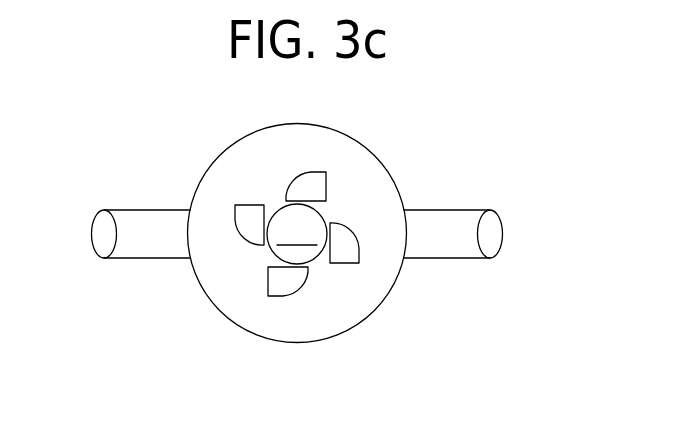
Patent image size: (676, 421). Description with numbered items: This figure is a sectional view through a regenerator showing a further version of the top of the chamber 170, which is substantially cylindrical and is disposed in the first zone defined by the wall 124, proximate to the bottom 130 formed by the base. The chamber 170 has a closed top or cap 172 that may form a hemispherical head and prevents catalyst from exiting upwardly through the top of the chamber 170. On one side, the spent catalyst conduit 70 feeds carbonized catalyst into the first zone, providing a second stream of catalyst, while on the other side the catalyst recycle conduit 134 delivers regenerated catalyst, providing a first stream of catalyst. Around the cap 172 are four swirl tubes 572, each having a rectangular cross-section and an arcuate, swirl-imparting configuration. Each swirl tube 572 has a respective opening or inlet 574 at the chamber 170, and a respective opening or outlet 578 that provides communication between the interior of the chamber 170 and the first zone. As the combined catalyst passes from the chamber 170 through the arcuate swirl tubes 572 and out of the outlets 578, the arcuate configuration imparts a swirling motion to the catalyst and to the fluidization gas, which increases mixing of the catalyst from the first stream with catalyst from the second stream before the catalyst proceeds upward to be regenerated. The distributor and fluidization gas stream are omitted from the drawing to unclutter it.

The spent catalyst conduit 70 is at (467, 210).
The wall 124 is at (253, 334).
The bottom 130 is at (290, 220).
The catalyst recycle conduit 134 is at (132, 223).
The chamber 170 is at (362, 202).
The cap 172 is at (297, 231).
The swirl tube 572 is at (307, 171).
The inlet 574 is at (265, 247).
The outlet 578 is at (327, 186).